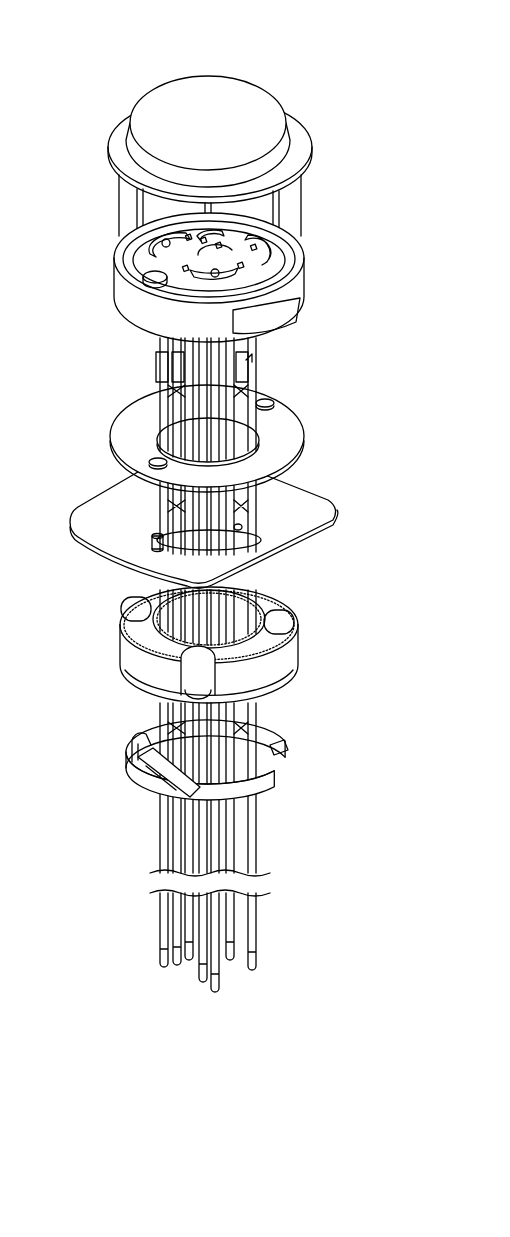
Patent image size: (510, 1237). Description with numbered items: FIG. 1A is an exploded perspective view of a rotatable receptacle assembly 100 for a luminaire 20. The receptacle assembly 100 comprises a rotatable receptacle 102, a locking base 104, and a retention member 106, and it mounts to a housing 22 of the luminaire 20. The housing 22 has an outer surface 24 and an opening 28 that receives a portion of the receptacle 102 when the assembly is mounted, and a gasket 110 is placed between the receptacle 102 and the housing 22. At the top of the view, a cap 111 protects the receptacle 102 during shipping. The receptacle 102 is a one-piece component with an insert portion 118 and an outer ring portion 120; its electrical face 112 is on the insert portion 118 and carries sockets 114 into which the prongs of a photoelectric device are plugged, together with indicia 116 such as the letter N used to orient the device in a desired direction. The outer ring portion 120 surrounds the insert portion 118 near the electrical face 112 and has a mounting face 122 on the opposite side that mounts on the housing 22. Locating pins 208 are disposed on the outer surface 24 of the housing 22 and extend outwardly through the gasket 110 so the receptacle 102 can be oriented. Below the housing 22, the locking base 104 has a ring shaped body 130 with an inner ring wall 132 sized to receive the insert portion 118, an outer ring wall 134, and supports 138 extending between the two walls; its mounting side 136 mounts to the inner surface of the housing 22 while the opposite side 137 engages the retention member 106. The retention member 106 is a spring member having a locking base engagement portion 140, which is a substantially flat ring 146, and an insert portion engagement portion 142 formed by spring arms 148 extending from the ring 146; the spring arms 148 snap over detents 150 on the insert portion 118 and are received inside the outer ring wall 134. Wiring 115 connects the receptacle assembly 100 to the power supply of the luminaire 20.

The receptacle assembly 100 is at (115, 46).
The cap 111 is at (205, 125).
The indicia 116 is at (152, 219).
The electrical face 112 is at (276, 214).
The rotatable receptacle 102 is at (296, 251).
The outer ring portion 120 is at (300, 283).
The sockets 114 is at (186, 241).
The mounting face 122 is at (290, 325).
The wiring 115 is at (136, 864).
The retention member 106 is at (231, 801).
The insert portion 118 is at (165, 352).
The detents 150 is at (250, 378).
The gasket 110 is at (288, 438).
The luminaire 20 is at (354, 488).
The outer surface 24 is at (92, 522).
The housing 22 is at (172, 592).
The opening 28 is at (246, 528).
The locating pins 208 is at (165, 543).
The ring shaped body 130 is at (122, 636).
The outer ring wall 134 is at (250, 684).
The mounting side 136 is at (124, 612).
The inner ring wall 132 is at (255, 640).
The supports 138 is at (160, 632).
The opposite side 137 is at (135, 684).
The locking base 104 is at (250, 683).
The locking base engagement portion 140 is at (273, 796).
The insert portion engagement portion 142 is at (286, 757).
The ring 146 is at (138, 735).
The spring arms 148 is at (148, 778).